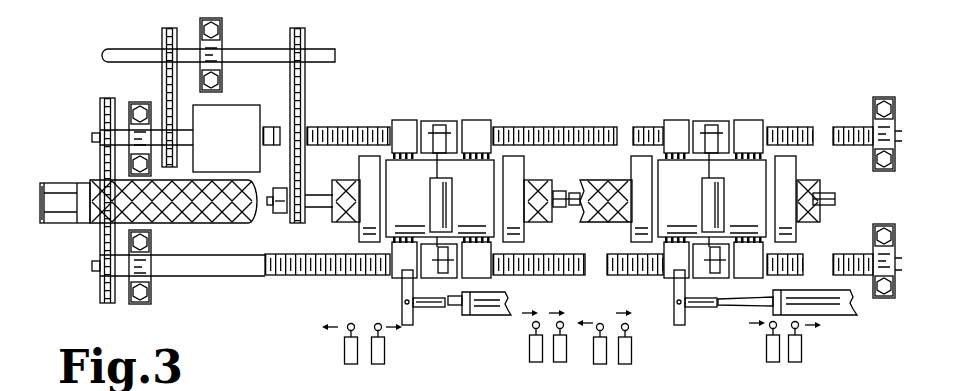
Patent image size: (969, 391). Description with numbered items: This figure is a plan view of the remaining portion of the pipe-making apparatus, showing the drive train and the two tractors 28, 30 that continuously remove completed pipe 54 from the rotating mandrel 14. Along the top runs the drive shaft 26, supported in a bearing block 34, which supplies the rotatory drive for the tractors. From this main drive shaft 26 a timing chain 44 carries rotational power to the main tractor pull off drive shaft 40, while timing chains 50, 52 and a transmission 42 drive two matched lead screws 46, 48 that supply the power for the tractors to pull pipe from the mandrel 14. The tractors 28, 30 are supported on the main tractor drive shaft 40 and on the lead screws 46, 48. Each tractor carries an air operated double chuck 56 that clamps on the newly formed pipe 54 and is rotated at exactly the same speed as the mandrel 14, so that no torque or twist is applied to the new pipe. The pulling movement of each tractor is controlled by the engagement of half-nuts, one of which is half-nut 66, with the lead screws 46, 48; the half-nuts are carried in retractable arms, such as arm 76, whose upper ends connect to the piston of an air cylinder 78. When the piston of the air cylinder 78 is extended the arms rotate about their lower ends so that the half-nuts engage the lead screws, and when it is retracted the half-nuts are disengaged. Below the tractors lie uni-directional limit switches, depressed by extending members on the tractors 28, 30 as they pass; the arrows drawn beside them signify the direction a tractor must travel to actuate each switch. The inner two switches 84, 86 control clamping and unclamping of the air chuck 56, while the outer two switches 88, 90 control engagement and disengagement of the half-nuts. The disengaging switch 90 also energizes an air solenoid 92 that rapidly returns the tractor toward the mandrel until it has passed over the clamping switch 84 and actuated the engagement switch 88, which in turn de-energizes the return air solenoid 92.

The mandrel 14 is at (58, 202).
The drive shaft 26 is at (322, 58).
The tractor 28 is at (483, 198).
The tractor 30 is at (758, 200).
The bearing block 34 is at (222, 30).
The main tractor pull off drive shaft 40 is at (283, 198).
The transmission 42 is at (243, 105).
The timing chain 44 is at (306, 100).
The lead screw 46 is at (593, 127).
The lead screw 48 is at (253, 267).
The timing chain 50 is at (163, 92).
The timing chain 52 is at (100, 157).
The pipe 54 is at (200, 208).
The air operated double chuck 56 is at (363, 168).
The half-nut 66 is at (422, 390).
The arm 76 is at (454, 387).
The air cylinder 78 is at (433, 208).
The limit switch 84 is at (387, 348).
The limit switch 86 is at (530, 348).
The limit switch 88 is at (345, 352).
The limit switch 90 is at (562, 355).
The air solenoid 92 is at (492, 305).